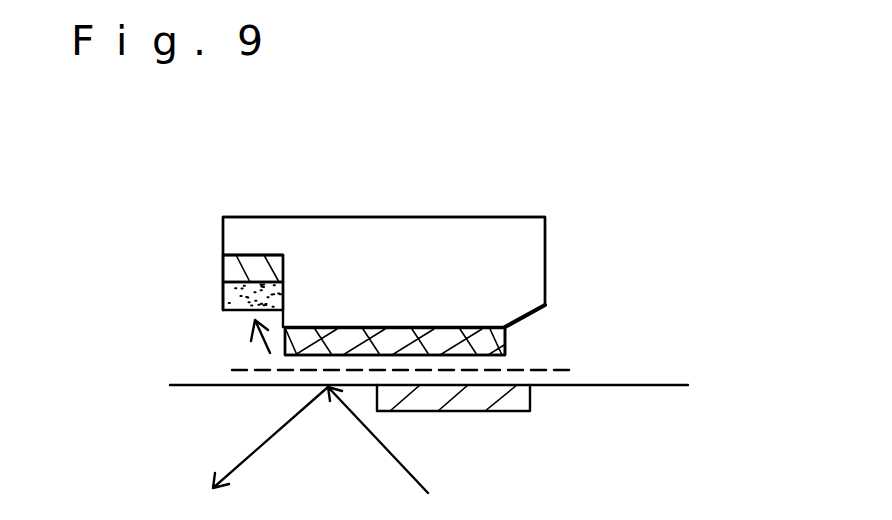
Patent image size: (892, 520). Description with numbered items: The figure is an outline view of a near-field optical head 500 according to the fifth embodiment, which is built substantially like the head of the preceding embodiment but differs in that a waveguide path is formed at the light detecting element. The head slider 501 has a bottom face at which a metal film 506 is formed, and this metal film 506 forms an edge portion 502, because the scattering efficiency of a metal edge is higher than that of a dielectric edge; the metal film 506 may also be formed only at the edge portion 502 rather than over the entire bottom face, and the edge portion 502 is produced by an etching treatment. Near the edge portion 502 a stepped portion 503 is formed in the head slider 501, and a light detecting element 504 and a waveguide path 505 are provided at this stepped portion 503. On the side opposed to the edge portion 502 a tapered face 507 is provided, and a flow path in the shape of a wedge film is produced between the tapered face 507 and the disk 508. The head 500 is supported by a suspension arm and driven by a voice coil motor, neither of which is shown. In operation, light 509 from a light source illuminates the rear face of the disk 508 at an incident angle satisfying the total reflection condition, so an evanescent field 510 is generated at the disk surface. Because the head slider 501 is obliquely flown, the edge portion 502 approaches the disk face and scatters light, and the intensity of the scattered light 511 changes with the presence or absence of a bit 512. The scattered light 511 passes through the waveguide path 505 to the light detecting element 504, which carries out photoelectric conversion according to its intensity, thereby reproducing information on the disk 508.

The near-field optical head 500 is at (112, 238).
The head slider 501 is at (532, 240).
The edge portion 502 is at (303, 328).
The stepped portion 503 is at (255, 254).
The light detecting element 504 is at (233, 267).
The waveguide path 505 is at (227, 297).
The metal film 506 is at (508, 338).
The tapered face 507 is at (533, 315).
The disk 508 is at (655, 397).
The light 509 is at (408, 473).
The evanescent field 510 is at (217, 370).
The scattered light 511 is at (270, 345).
The bit 512 is at (520, 398).